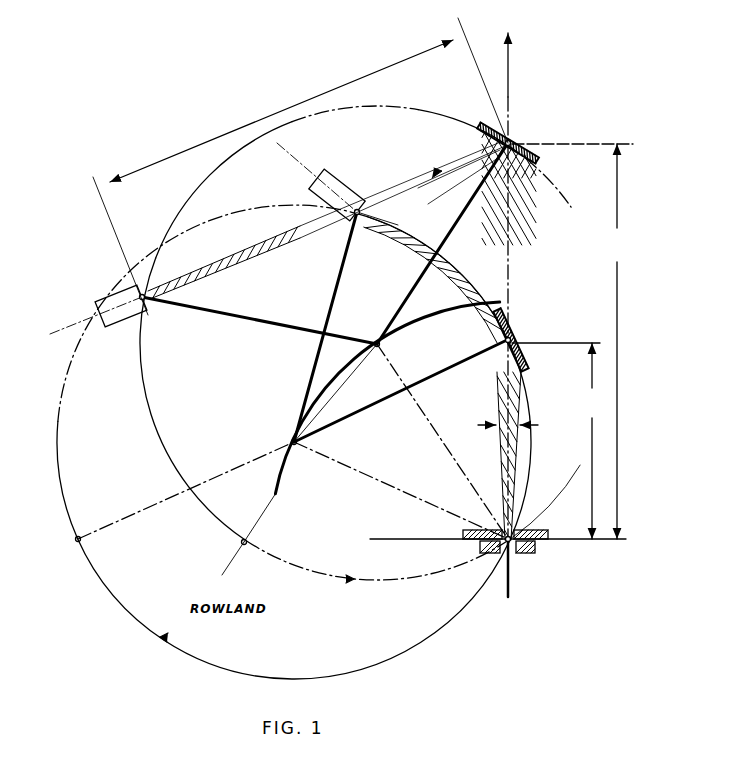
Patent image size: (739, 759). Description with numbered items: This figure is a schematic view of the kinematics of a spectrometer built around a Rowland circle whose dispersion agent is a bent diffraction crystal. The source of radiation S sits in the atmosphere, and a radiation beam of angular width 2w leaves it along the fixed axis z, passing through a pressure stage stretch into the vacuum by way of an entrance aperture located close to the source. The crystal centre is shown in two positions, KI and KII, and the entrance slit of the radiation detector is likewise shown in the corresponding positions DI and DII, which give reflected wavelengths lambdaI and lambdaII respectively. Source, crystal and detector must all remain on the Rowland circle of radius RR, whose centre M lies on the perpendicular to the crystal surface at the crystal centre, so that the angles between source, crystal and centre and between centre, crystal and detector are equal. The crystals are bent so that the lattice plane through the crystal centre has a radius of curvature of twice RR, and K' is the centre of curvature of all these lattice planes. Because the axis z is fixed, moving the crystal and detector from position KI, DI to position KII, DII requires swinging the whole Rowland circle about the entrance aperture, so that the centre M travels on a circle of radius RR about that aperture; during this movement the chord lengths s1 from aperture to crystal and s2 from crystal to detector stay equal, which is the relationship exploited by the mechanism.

The entrance slit of the radiation detector in position I DI is at (357, 209).
The entrance slit of the radiation detector in position II DII is at (139, 295).
The centre of the diffraction crystal in position I KI is at (512, 337).
The centre of the diffraction crystal in position II KII is at (512, 140).
The source of radiation S is at (518, 548).
The centre of the Rowland circle M is at (323, 382).
The centre of curvature of the crystal bending K' is at (148, 552).
The radius of the Rowland circle RR is at (318, 392).
The cord S*K s1 is at (556, 441).
The cord KD s2 is at (363, 278).
The angular width of the radiation beam 2w is at (514, 423).
The reflected wave length in position I lambdaI is at (392, 240).
The reflected wave length in position II lambdaII is at (200, 268).
The axis of the radiation beam z is at (507, 273).